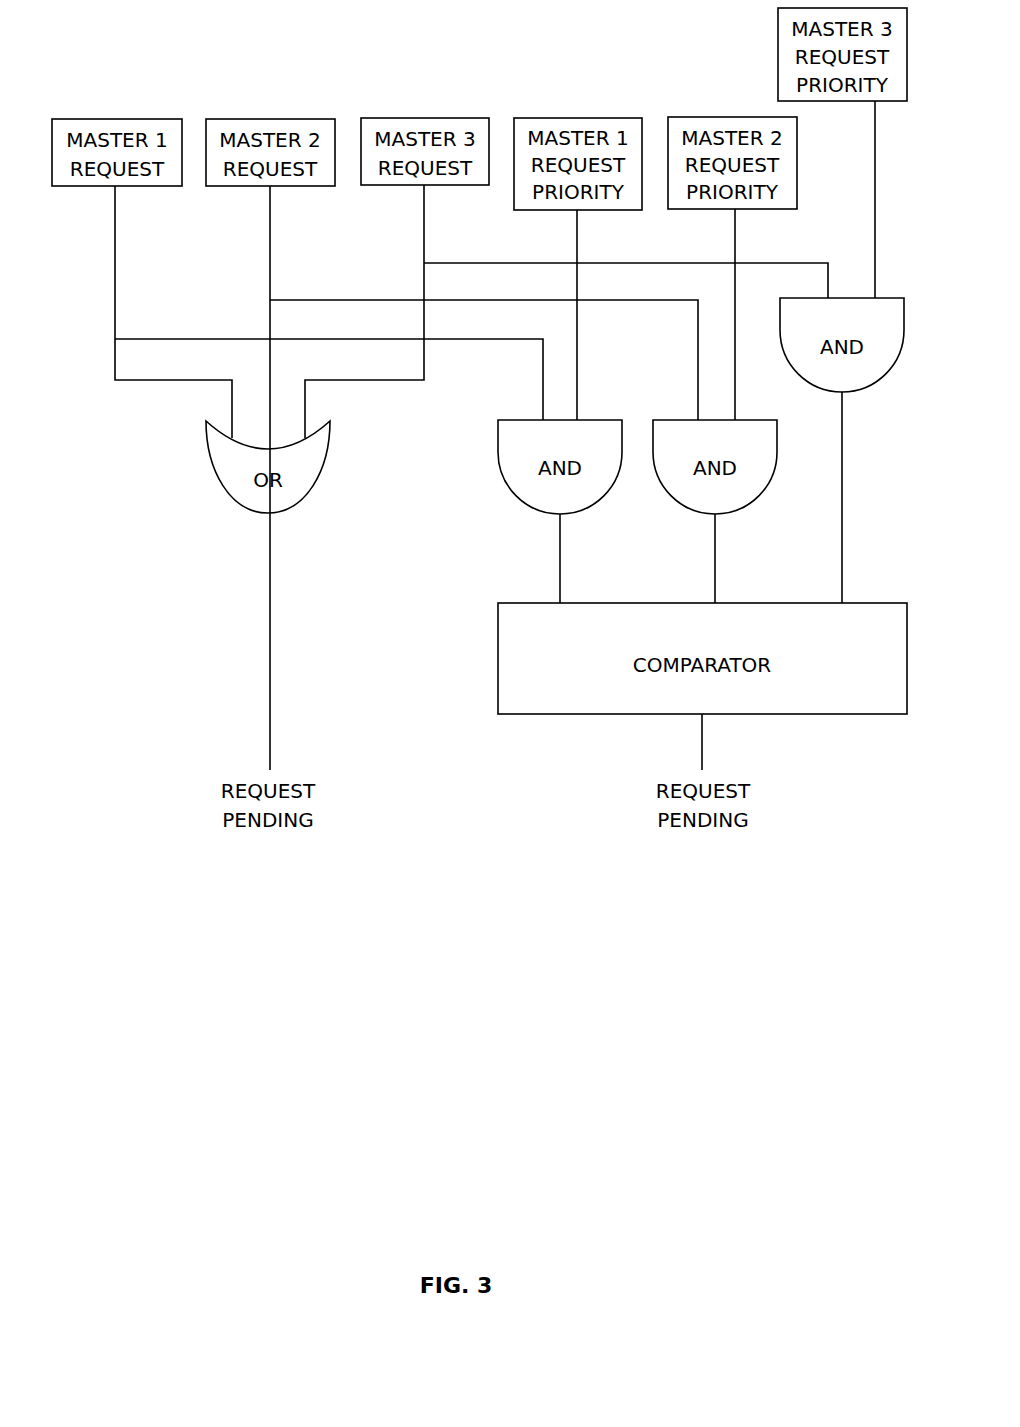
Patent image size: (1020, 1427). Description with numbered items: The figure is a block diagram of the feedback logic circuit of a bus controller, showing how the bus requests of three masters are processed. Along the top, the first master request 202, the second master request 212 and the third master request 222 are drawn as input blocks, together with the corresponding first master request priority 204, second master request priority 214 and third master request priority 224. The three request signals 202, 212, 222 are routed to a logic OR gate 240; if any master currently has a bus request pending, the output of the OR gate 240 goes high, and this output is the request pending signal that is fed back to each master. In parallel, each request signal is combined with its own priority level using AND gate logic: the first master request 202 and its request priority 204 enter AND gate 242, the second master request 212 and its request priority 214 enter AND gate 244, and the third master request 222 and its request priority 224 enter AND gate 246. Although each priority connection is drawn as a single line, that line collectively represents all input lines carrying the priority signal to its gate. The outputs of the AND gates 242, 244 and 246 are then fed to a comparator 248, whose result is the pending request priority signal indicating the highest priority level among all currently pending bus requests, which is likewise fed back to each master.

The Master 1 request 202 is at (97, 119).
The Master 2 request 212 is at (250, 119).
The Master 3 request 222 is at (405, 118).
The Master 1 request priority 204 is at (557, 118).
The Master 2 request priority 214 is at (740, 117).
The Master 3 request priority 224 is at (778, 48).
The OR gate 240 is at (330, 427).
The AND gate 242 is at (586, 418).
The AND gate 244 is at (768, 477).
The AND gate 246 is at (780, 310).
The comparator 248 is at (617, 603).